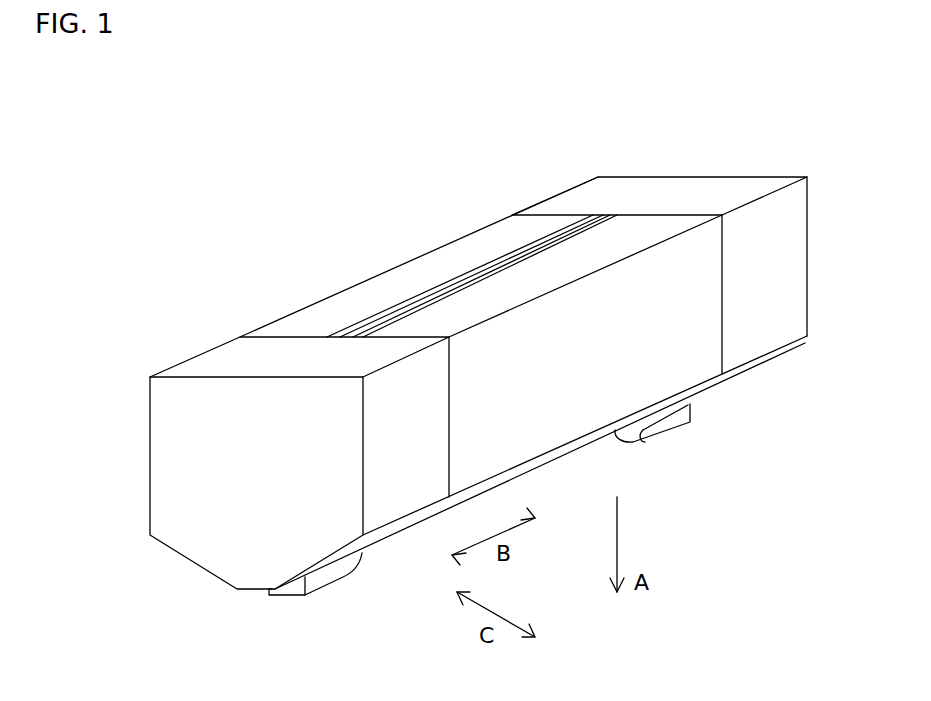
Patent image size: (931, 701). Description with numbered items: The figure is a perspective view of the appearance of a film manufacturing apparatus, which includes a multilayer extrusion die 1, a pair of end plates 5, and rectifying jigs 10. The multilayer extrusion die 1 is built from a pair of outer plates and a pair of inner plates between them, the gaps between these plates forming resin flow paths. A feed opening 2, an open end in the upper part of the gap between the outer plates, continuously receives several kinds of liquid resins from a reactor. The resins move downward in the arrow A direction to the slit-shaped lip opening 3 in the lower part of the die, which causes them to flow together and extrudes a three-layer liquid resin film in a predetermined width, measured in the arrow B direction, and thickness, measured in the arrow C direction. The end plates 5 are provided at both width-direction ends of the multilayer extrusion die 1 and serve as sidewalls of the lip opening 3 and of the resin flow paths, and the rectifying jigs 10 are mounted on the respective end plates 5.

The multilayer extrusion die 1 is at (378, 272).
The feed opening 2 is at (481, 270).
The lip opening 3 is at (592, 443).
The end plate 5 is at (206, 350).
The rectifying jig 10 is at (327, 580).